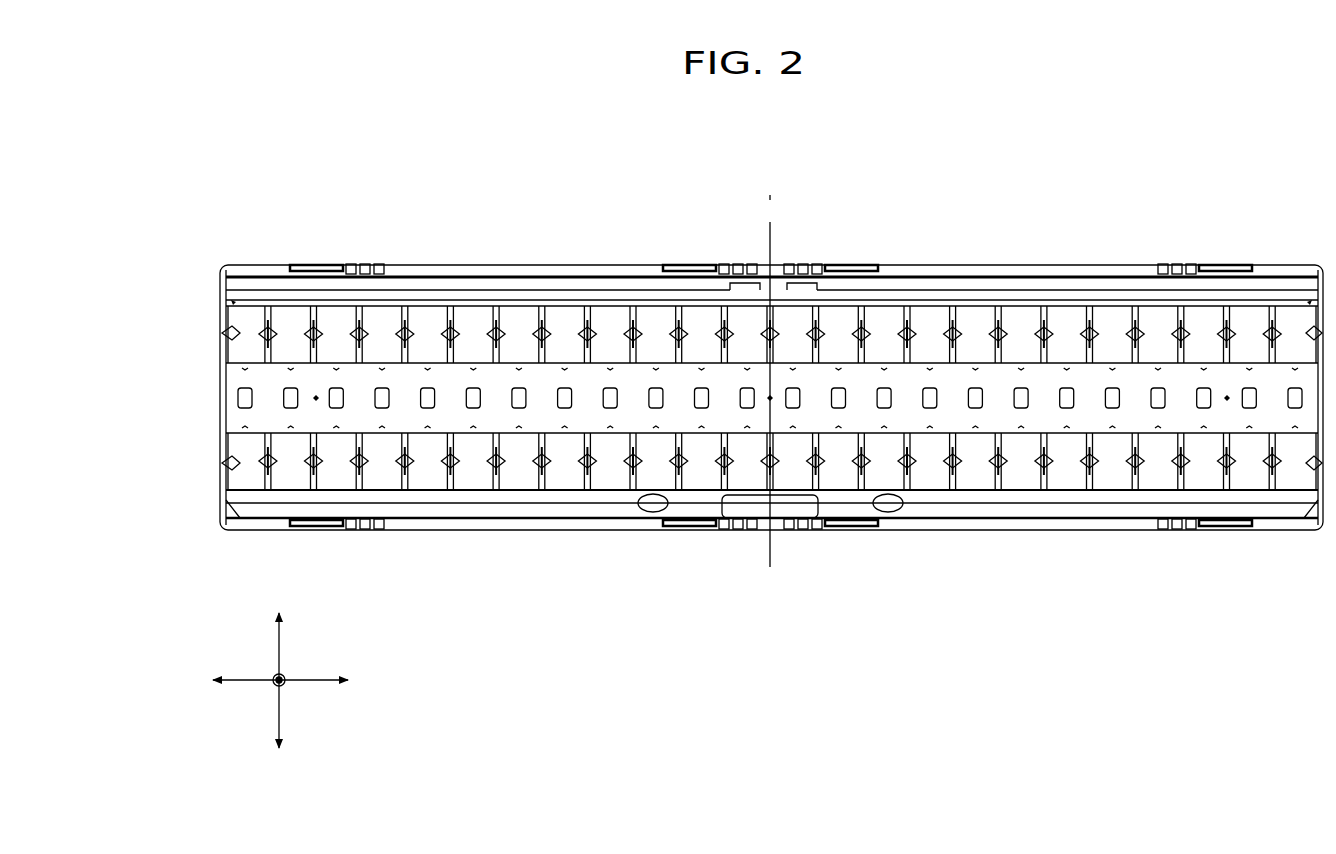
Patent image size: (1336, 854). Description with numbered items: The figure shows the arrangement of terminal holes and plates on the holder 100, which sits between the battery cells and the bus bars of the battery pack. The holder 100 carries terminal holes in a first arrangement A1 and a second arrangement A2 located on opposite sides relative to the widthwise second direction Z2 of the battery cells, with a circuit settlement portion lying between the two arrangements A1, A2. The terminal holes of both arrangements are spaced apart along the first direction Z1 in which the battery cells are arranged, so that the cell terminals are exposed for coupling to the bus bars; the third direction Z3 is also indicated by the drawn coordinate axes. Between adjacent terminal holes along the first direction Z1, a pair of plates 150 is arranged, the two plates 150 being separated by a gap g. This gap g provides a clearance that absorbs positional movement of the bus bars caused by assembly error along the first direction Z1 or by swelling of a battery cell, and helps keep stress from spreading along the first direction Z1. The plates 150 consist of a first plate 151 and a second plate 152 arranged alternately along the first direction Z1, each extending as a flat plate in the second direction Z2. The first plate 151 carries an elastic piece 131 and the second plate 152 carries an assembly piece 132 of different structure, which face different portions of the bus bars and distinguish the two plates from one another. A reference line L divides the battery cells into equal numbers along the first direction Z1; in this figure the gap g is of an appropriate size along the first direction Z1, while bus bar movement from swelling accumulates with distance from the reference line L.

The holder 100 is at (172, 396).
The elastic piece 131 is at (1003, 348).
The assembly piece 132 is at (1140, 350).
The plate 150 is at (910, 310).
The first plate 151 is at (1010, 352).
The second plate 152 is at (1142, 352).
The first arrangement A1 is at (215, 333).
The second arrangement A2 is at (215, 463).
The gap g is at (1000, 355).
The reference line L is at (769, 381).
The first direction Z1 is at (327, 681).
The second direction Z2 is at (279, 637).
The third direction Z3 is at (249, 669).